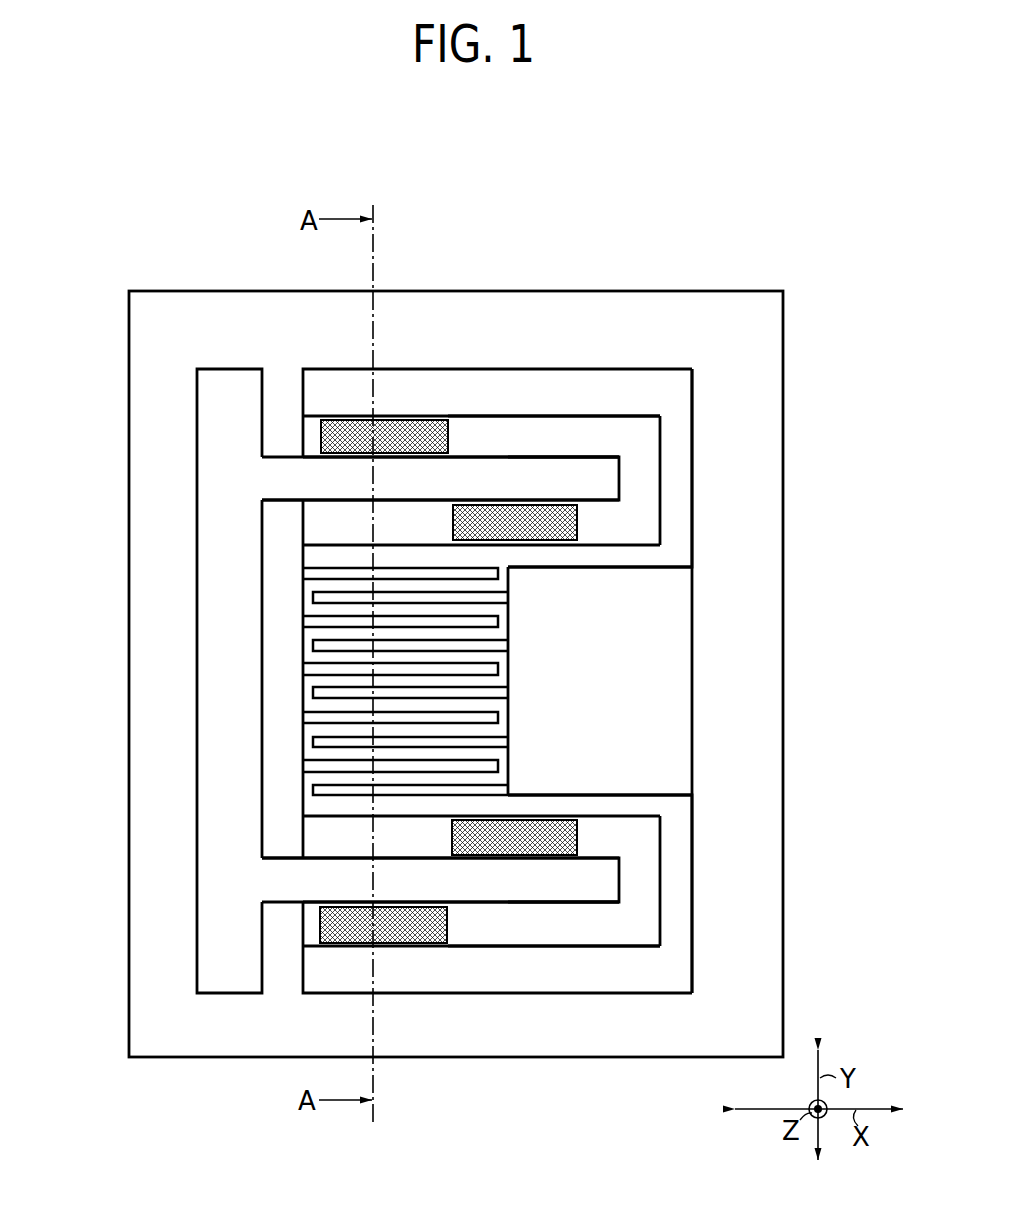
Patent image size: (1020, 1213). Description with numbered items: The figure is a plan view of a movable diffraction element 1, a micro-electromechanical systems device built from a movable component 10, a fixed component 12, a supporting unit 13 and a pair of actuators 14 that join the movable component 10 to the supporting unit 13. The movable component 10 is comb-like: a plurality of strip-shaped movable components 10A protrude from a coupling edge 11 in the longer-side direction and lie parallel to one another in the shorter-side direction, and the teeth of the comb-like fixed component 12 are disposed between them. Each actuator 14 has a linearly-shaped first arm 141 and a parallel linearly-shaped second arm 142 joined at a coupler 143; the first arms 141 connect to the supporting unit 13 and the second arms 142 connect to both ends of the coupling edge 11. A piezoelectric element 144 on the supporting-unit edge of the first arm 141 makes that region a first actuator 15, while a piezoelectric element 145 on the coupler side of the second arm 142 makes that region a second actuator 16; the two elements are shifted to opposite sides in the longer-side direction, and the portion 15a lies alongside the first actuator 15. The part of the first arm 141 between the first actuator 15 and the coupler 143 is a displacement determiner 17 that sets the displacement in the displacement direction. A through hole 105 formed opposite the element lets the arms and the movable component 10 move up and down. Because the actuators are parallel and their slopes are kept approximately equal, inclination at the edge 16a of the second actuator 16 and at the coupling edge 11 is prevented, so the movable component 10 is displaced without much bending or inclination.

The movable diffraction element 1 is at (824, 203).
The movable component 10 is at (323, 684).
The strip-shaped movable component 10A is at (325, 660).
The coupling edge 11 is at (273, 537).
The fixed component 12 is at (518, 578).
The supporting unit 13 is at (281, 347).
The actuator 14 is at (666, 380).
The first actuator 15 is at (358, 405).
The first electrode gap 15a is at (478, 430).
The second actuator 16 is at (526, 493).
The edge of the second actuator 16a is at (613, 527).
The displacement determiner 17 is at (578, 442).
The through hole 105 is at (688, 415).
The first arm 141 is at (538, 440).
The second arm 142 is at (368, 510).
The coupler 143 is at (640, 479).
The piezoelectric element 144 is at (392, 420).
The piezoelectric element 145 is at (577, 525).